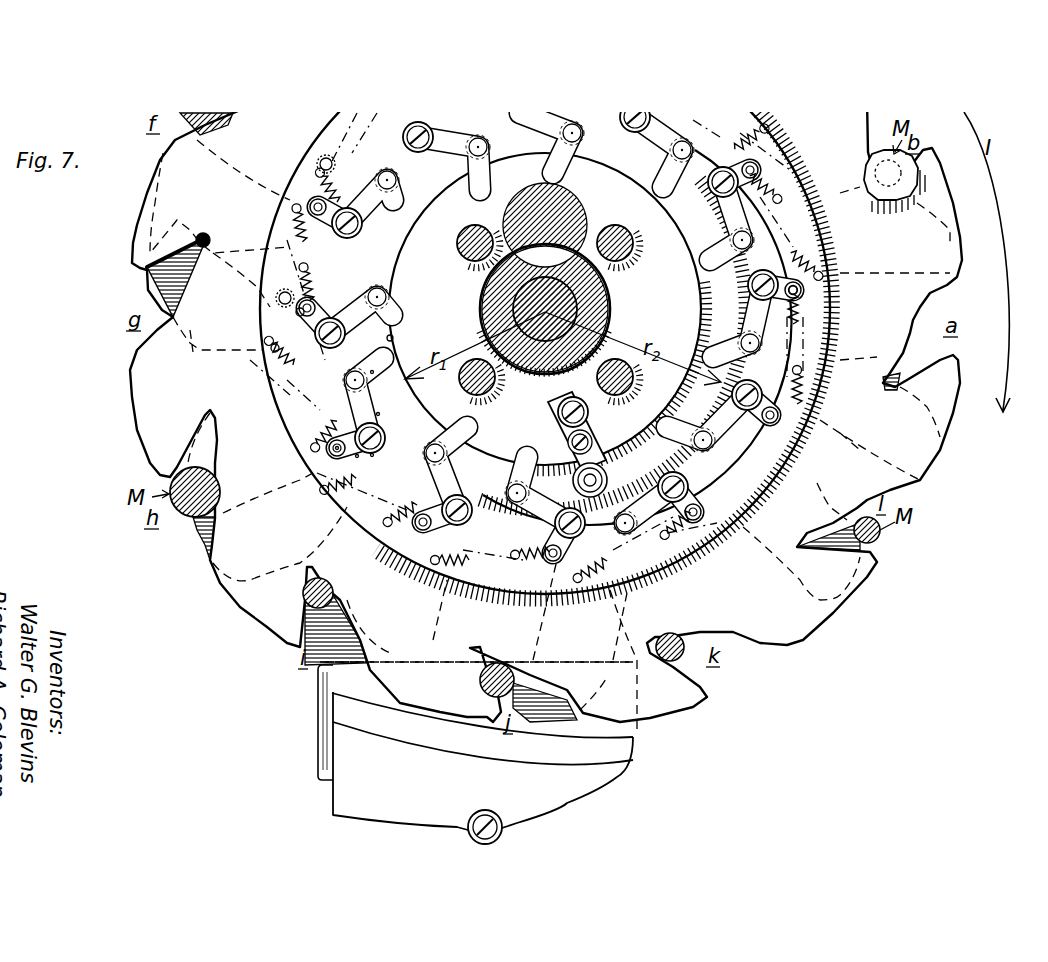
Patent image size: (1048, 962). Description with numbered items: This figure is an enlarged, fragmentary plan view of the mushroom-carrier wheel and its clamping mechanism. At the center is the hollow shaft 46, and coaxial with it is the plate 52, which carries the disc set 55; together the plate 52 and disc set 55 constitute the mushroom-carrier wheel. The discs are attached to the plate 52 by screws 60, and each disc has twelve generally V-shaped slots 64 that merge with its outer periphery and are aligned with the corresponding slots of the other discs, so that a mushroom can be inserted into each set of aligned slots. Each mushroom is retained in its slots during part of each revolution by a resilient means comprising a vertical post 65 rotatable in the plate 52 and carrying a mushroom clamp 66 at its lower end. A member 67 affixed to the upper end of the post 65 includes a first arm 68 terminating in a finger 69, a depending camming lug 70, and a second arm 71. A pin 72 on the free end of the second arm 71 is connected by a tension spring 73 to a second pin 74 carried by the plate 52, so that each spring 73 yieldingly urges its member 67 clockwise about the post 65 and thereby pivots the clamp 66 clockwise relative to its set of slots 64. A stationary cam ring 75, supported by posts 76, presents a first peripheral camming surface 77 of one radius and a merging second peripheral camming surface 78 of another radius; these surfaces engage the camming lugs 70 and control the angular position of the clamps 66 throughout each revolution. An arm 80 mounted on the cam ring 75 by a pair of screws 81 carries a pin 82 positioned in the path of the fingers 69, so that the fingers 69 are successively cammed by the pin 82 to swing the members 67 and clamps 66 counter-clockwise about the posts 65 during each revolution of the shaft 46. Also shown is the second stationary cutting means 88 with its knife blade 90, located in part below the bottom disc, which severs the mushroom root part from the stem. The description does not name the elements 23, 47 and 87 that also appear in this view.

The roller 23 is at (618, 560).
The hollow shaft 46 is at (547, 255).
The shaft 47 is at (537, 295).
The plate 52 is at (278, 263).
The disc set 55 is at (141, 404).
The screws 60 is at (317, 162).
The V-shaped slots 64 is at (178, 285).
The vertical post 65 is at (378, 450).
The mushroom clamp 66 is at (150, 288).
The member 67 is at (359, 294).
The first arm 68 is at (380, 416).
The finger 69 is at (375, 370).
The camming lug 70 is at (378, 392).
The second arm 71 is at (360, 450).
The pin 72 is at (330, 447).
The tension spring 73 is at (293, 362).
The second pin 74 is at (298, 316).
The stationary cam ring 75 is at (413, 240).
The posts 76 is at (482, 235).
The first peripheral camming surface 77 is at (394, 338).
The second peripheral camming surface 78 is at (740, 366).
The arm 80 is at (578, 426).
The screws 81 is at (562, 411).
The pin 82 is at (592, 440).
The screw 87 is at (465, 836).
The second stationary cutting means 88 is at (454, 760).
The knife blade 90 is at (328, 685).